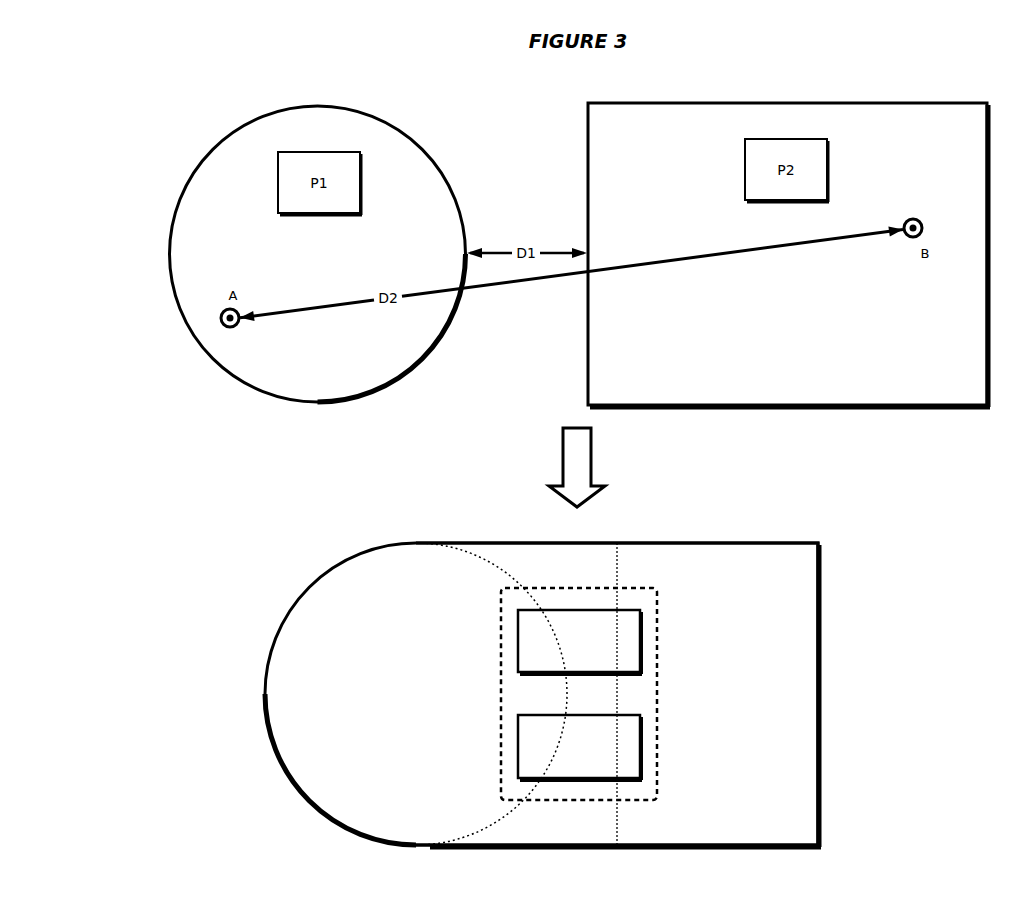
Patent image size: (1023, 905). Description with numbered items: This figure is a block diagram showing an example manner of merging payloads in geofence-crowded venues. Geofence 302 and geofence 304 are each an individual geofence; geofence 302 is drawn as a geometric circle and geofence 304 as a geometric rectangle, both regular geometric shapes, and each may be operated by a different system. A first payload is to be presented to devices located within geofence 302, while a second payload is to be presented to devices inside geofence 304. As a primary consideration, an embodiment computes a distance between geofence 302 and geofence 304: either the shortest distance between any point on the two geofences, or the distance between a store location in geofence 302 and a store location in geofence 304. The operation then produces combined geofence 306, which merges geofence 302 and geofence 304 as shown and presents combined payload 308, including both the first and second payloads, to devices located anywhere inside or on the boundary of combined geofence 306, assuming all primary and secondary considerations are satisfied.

The geofence 302 is at (304, 370).
The geofence 304 is at (772, 375).
The combined geofence 306 is at (818, 585).
The combined payload 308 is at (657, 597).